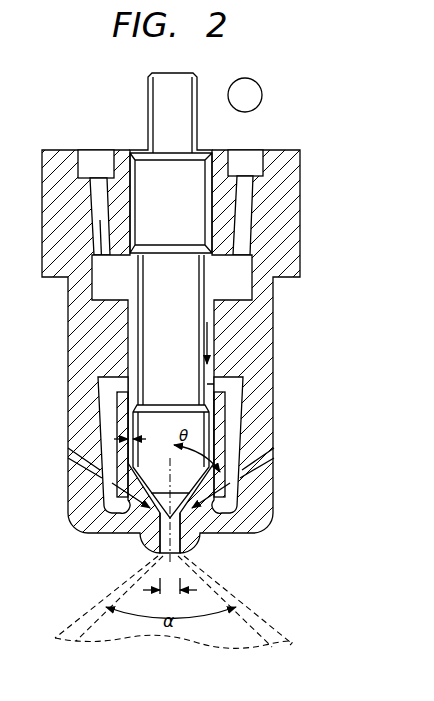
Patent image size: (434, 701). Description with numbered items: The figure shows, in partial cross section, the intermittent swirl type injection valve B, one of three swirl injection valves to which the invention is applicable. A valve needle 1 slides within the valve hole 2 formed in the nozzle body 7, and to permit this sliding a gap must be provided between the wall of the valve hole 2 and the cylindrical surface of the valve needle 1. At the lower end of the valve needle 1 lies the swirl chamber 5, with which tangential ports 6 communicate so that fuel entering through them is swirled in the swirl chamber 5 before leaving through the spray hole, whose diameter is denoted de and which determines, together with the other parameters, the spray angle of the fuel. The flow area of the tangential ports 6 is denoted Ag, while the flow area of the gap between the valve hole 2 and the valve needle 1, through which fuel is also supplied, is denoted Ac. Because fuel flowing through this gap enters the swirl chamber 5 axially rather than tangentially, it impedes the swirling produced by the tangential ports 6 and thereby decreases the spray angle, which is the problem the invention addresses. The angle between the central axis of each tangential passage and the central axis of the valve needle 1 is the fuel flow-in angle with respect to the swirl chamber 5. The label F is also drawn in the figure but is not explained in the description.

The valve needle 1 is at (208, 428).
The valve hole 2 is at (130, 452).
The swirl chamber 5 is at (159, 516).
The tangential ports 6 is at (116, 498).
The nozzle body 7 is at (256, 338).
The injection valve B is at (277, 301).
The spring force F is at (245, 167).
The area of the tangential passages Ag is at (234, 490).
The area of the gap Ac is at (135, 430).
The diameter of the spray hole de is at (170, 594).